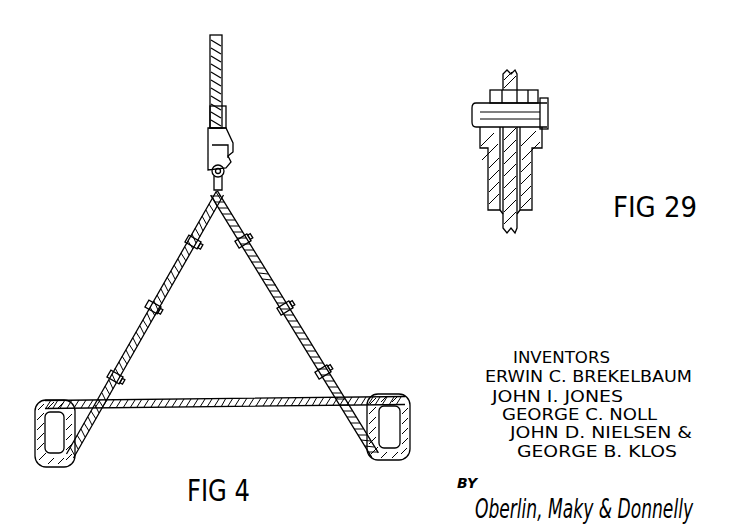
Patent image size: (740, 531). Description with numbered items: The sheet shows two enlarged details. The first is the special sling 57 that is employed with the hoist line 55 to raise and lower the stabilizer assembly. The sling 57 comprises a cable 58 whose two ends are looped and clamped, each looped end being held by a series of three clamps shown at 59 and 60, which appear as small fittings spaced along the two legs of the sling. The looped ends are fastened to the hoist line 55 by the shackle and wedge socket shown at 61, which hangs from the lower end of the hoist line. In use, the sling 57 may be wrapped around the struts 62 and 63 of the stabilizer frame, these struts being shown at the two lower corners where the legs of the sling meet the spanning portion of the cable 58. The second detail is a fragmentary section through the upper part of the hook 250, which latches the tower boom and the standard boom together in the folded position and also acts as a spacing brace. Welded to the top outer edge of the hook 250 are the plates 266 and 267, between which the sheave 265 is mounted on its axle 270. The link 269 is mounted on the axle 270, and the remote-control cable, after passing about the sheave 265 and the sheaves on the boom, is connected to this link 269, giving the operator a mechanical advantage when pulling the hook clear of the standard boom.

In FIG. 4, the hoist line 55 is at (222, 66).
In FIG. 4, the shackle and wedge socket 61 is at (224, 173).
In FIG. 4, the sling 57 is at (293, 262).
In FIG. 4, the clamps 59 is at (185, 238).
In FIG. 4, the clamps 60 is at (251, 236).
In FIG. 4, the cable 58 is at (240, 410).
In FIG. 4, the strut 62 is at (64, 437).
In FIG. 4, the strut 63 is at (378, 434).
In FIG. 29, the sheave 265 is at (516, 72).
In FIG. 29, the link 269 is at (536, 92).
In FIG. 29, the axle 270 is at (472, 114).
In FIG. 29, the plate 266 is at (488, 188).
In FIG. 29, the plate 267 is at (532, 178).
In FIG. 29, the hook 250 is at (517, 228).